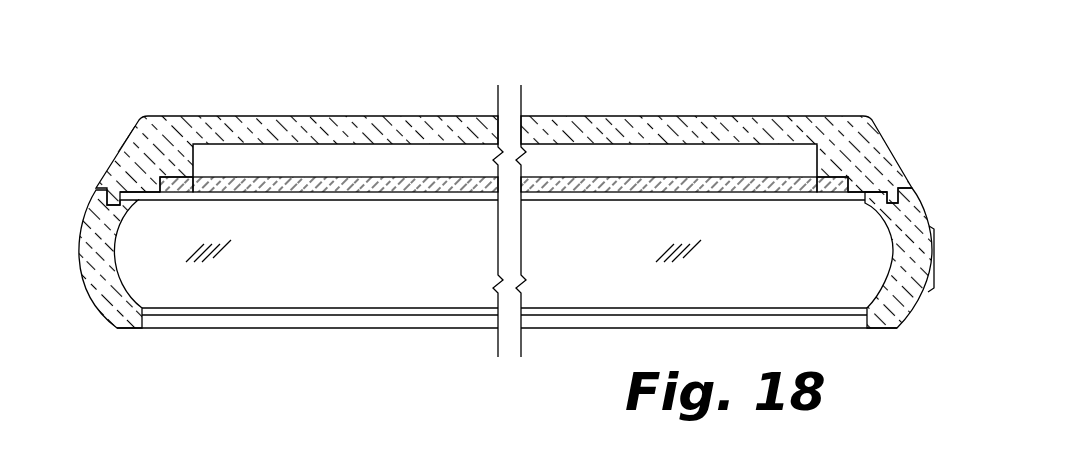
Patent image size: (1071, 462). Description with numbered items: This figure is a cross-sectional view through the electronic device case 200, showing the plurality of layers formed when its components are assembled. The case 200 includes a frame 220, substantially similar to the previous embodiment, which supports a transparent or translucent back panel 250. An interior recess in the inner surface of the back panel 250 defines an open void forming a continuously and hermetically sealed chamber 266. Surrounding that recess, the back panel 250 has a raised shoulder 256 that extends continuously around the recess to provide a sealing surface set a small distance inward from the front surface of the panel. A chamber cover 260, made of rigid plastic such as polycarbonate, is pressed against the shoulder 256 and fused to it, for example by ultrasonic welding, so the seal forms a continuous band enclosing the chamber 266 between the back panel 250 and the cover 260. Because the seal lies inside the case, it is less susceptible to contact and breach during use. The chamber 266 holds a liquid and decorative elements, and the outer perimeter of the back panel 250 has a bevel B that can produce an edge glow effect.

The electronic device case 200 is at (932, 82).
The frame 220 is at (898, 300).
The back panel 250 is at (405, 125).
The shoulder 256 is at (177, 181).
The chamber cover 260 is at (358, 183).
The chamber 266 is at (725, 162).
The bevel B is at (112, 152).